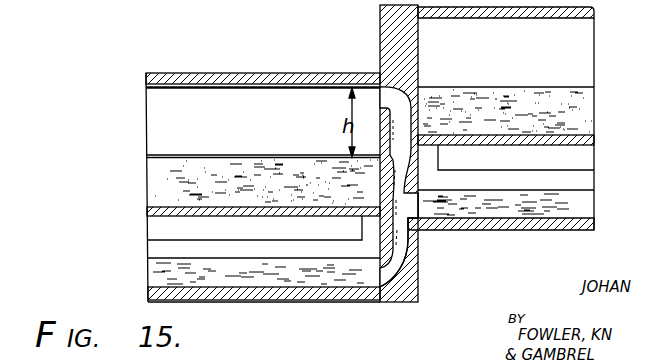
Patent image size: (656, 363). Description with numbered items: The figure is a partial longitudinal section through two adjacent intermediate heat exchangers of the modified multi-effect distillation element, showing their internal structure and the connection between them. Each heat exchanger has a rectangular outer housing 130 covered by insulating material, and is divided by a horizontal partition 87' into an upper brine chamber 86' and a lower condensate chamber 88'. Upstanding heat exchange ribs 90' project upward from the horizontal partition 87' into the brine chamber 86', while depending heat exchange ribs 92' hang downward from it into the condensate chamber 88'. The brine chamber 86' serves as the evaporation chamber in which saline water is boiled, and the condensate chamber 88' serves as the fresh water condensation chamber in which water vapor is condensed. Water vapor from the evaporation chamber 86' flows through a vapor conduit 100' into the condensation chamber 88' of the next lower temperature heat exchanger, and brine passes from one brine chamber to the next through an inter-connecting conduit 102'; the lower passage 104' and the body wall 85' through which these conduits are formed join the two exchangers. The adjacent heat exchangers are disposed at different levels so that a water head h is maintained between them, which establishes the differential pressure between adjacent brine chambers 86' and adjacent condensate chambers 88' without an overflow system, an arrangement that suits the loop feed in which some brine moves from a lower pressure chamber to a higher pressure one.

The body block 85' is at (420, 153).
The vapor conduit 100' is at (428, 174).
The inter-connecting conduit 102' is at (446, 195).
The lower passage 104' is at (424, 252).
The rectangular outer housing 130 is at (272, 73).
The brine chamber 86' is at (237, 187).
The upstanding heat exchange rib 90' is at (239, 179).
The horizontal partition 87' is at (367, 185).
The depending heat exchange rib 92' is at (233, 236).
The condensate chamber 88' is at (240, 279).